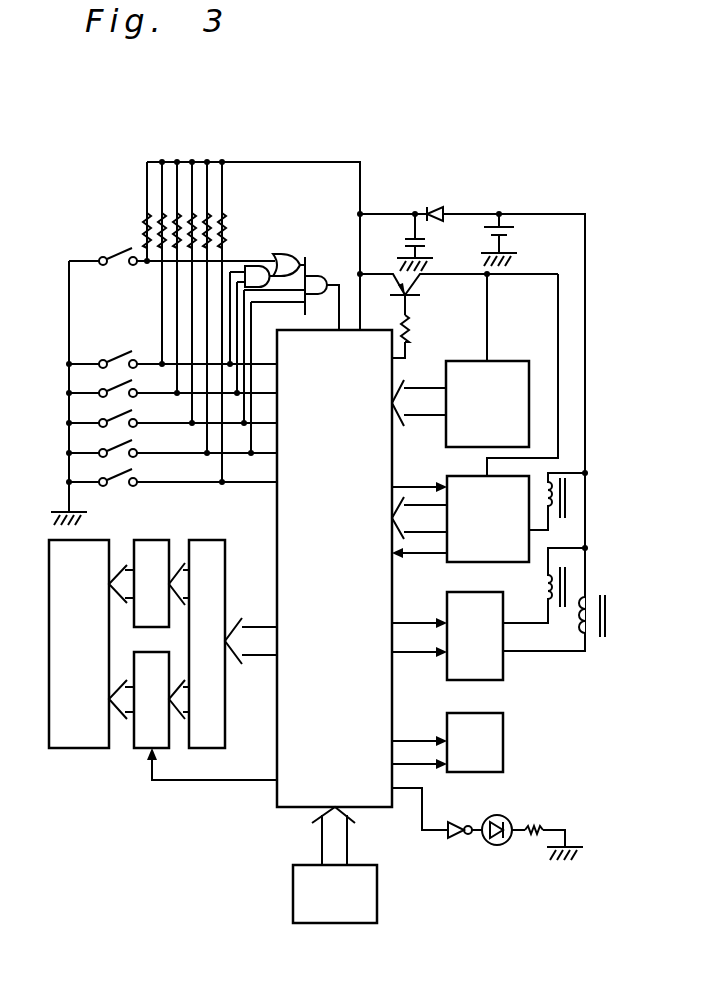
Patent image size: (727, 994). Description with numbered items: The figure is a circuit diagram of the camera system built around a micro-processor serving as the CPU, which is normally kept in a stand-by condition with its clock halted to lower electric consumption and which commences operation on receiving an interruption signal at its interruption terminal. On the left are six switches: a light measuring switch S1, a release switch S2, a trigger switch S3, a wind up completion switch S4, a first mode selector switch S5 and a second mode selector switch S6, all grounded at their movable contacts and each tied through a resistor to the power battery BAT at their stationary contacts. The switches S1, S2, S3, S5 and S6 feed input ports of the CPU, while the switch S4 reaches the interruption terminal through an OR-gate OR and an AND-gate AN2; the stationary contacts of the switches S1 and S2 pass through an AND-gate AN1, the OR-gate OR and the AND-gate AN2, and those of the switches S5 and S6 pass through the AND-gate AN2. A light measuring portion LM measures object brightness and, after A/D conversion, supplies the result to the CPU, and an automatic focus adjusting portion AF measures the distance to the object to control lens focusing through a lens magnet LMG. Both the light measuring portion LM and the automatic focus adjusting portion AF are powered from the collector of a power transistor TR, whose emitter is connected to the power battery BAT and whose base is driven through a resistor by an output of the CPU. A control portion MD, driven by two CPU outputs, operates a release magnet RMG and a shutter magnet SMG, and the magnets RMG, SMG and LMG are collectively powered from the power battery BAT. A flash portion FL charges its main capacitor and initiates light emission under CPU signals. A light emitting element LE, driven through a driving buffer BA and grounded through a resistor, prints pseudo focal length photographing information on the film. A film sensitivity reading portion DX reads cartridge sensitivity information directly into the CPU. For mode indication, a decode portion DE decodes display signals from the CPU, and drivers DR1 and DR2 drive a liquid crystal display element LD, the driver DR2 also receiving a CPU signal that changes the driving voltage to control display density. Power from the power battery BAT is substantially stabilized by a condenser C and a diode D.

The light measuring switch S1 is at (117, 356).
The release switch S2 is at (117, 385).
The trigger switch S3 is at (107, 468).
The wind up completion switch S4 is at (172, 282).
The first mode selector switch S5 is at (117, 415).
The second mode selector switch S6 is at (107, 439).
The AND-gate AN1 is at (257, 266).
The OR-gate OR is at (284, 255).
The AND-gate AN2 is at (320, 277).
The central processing unit CPU is at (334, 568).
The power transistor TR is at (459, 316).
The diode D is at (439, 201).
The condenser C is at (409, 242).
The power battery BAT is at (518, 240).
The light measuring portion LM is at (460, 404).
The automatic focus adjusting portion AF is at (460, 519).
The control portion MD is at (447, 636).
The flash portion FL is at (447, 742).
The lens magnet LMG is at (570, 500).
The release magnet RMG is at (570, 585).
The shutter magnet SMG is at (607, 616).
The driving buffer BA is at (459, 817).
The light emitting element LE is at (532, 828).
The liquid crystal display element LD is at (91, 644).
The driver DR1 is at (161, 583).
The driver DR2 is at (205, 716).
The decode portion DE is at (207, 644).
The film sensitivity reading portion DX is at (335, 865).